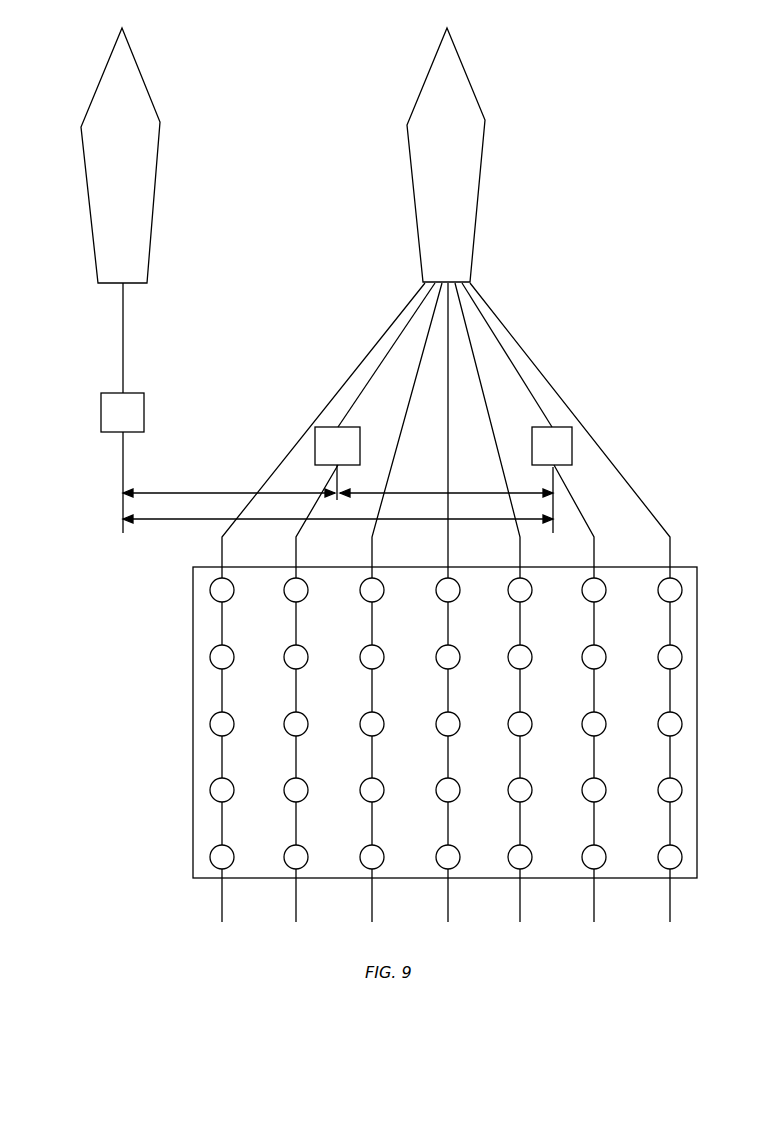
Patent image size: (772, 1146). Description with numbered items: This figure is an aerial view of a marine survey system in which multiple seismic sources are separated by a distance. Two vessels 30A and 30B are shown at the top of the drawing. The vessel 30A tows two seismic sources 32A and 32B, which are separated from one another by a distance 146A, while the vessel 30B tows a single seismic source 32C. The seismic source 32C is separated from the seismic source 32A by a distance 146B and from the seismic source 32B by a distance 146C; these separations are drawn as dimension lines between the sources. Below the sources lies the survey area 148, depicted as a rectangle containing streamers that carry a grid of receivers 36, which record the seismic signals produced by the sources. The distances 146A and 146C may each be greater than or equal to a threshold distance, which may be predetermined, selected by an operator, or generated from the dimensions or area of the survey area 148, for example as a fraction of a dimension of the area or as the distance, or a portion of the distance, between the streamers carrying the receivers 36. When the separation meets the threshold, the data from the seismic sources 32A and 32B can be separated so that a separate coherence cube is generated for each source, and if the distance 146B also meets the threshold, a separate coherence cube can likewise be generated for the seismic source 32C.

The vessel 30A is at (485, 120).
The vessel 30B is at (160, 122).
The seismic source 32A is at (315, 438).
The seismic source 32B is at (572, 432).
The seismic source 32C is at (101, 417).
The receivers 36 is at (679, 585).
The distance 146A is at (483, 490).
The distance 146B is at (231, 493).
The distance 146C is at (336, 520).
The survey area 148 is at (193, 722).